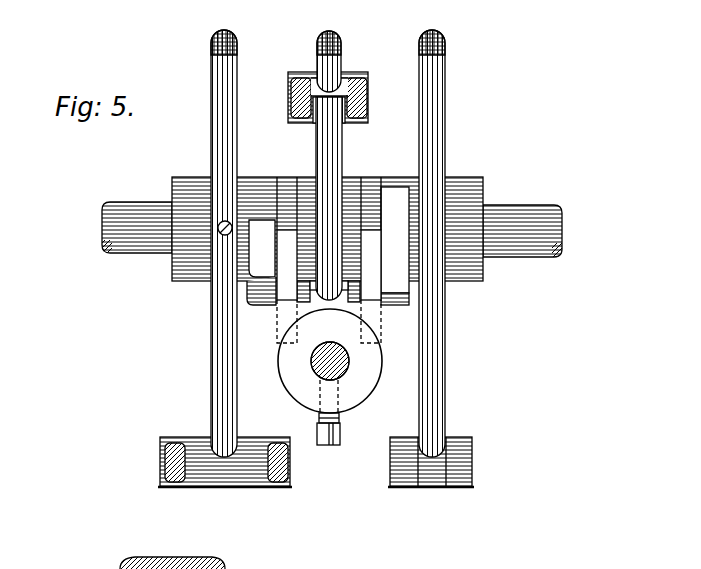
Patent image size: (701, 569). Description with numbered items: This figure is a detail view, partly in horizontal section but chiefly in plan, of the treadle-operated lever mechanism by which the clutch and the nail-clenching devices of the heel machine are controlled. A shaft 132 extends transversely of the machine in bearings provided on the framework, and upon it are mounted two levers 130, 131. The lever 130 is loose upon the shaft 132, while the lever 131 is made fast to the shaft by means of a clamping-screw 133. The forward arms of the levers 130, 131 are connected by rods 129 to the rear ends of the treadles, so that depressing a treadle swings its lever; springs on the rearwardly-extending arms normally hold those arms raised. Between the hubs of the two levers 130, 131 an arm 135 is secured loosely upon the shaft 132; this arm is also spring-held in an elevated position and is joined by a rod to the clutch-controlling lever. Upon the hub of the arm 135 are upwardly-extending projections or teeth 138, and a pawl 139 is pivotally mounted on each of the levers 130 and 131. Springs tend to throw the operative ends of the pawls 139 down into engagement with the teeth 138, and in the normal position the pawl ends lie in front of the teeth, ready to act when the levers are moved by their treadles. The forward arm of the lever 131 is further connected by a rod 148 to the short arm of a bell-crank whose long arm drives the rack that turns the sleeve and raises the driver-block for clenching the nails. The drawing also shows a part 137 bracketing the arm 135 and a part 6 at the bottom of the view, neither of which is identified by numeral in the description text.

The shaft 6 is at (258, 568).
The rods 129 is at (257, 490).
The lever 130 is at (445, 360).
The lever 131 is at (219, 363).
The shaft 132 is at (110, 256).
The clamping-screw 133 is at (222, 236).
The arm 135 is at (315, 143).
The bracket 137 is at (289, 84).
The projections or teeth 138 is at (283, 221).
The pawl 139 is at (289, 300).
The rod 148 is at (277, 490).